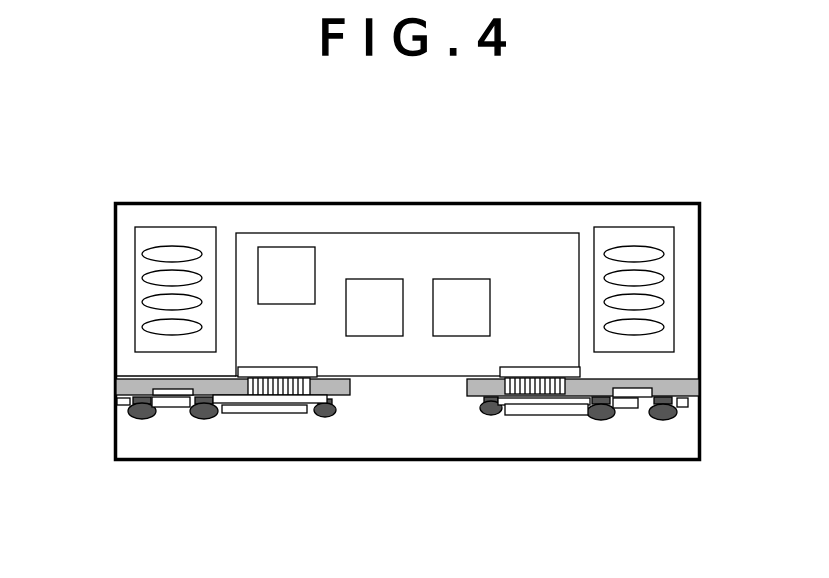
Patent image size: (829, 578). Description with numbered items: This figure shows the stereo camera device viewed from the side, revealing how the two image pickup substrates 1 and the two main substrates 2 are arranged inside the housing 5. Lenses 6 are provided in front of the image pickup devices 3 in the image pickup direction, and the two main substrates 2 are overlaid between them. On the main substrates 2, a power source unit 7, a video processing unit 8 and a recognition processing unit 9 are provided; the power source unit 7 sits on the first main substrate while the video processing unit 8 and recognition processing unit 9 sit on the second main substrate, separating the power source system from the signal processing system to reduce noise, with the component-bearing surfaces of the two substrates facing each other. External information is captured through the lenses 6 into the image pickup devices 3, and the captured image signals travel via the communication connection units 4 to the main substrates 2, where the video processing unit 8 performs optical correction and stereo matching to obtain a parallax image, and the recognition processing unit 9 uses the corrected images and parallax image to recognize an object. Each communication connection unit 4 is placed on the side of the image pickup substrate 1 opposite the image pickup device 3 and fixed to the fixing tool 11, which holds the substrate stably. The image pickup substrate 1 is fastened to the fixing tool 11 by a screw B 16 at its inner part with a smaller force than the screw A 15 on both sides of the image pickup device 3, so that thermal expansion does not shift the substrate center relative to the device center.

The image pickup substrate 1 is at (190, 410).
The main substrate 2 is at (240, 238).
The image pickup device 3 is at (160, 375).
The communication connection unit 4 is at (268, 410).
The housing 5 is at (687, 240).
The lens 6 is at (137, 272).
The power source unit 7 is at (300, 250).
The video processing unit 8 is at (398, 295).
The recognition processing unit 9 is at (475, 295).
The fixing tool 11 is at (122, 402).
The screw A 15 is at (142, 423).
The screw B 16 is at (327, 425).